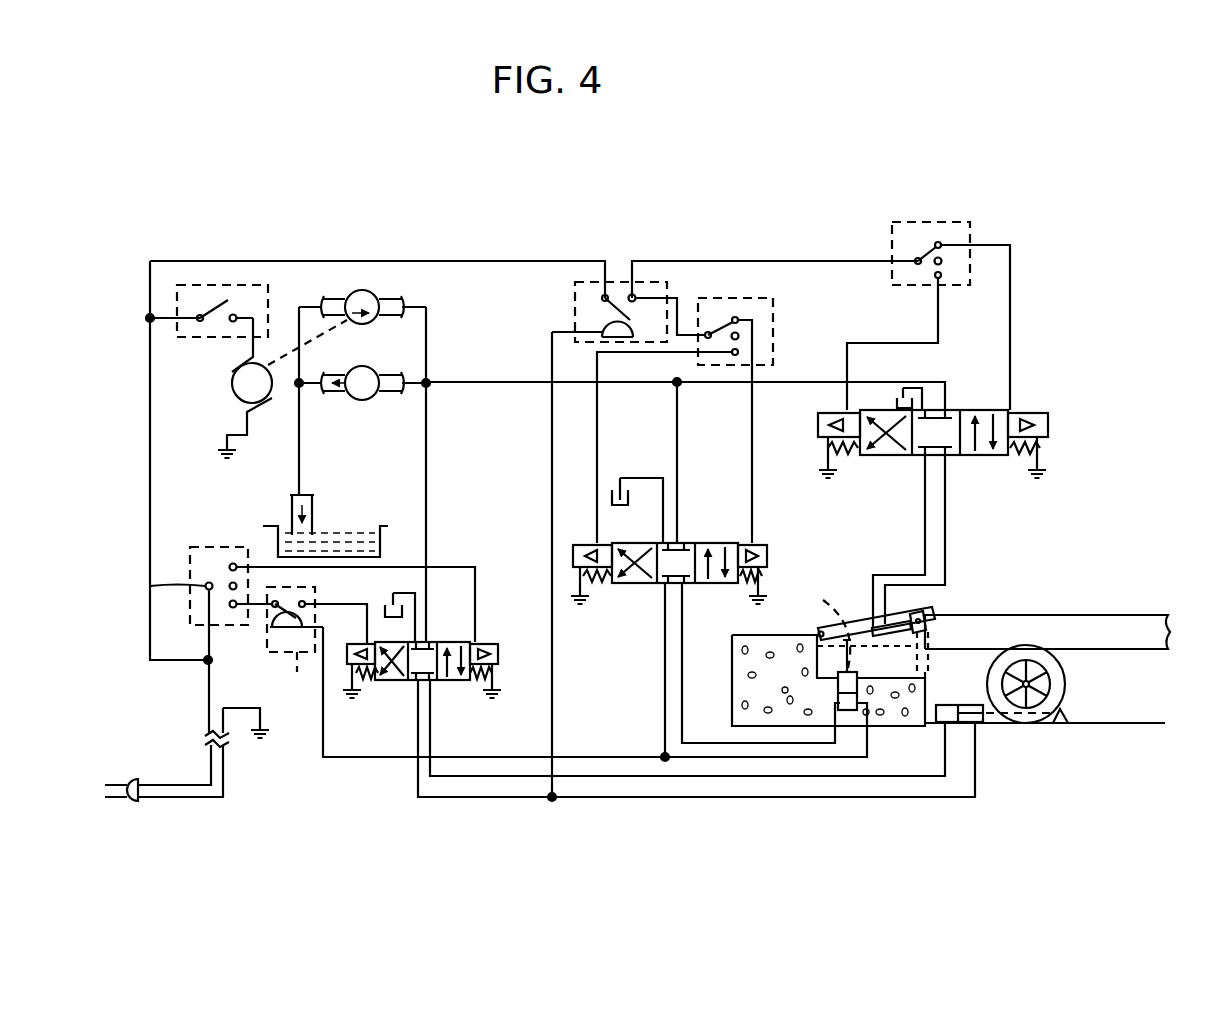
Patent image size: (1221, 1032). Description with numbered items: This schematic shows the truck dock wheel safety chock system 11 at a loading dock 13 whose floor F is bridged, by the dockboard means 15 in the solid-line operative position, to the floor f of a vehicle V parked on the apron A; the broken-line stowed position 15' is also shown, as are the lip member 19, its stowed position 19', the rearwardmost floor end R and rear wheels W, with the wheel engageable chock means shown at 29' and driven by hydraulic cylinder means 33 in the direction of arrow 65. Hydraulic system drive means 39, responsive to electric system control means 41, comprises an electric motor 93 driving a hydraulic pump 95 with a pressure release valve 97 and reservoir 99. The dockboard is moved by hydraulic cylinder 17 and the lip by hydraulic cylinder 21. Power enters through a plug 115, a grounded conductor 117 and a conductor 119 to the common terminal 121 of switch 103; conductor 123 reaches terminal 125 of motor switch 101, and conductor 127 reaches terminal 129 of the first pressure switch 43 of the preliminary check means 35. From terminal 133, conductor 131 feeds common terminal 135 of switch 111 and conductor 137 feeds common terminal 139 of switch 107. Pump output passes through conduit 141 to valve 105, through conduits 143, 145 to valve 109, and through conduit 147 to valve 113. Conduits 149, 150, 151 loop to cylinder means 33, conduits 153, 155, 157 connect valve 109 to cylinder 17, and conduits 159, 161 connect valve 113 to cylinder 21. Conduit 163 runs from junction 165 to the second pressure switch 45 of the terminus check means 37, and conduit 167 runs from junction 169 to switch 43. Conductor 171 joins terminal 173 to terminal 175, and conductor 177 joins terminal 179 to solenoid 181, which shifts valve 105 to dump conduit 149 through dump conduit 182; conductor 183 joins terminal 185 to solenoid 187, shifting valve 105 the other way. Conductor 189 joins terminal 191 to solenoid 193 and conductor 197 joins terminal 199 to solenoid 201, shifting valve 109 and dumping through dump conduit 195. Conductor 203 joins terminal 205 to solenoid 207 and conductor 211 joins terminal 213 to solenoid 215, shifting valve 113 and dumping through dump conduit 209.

The truck dock wheel safety chock system 11 is at (1160, 222).
The truck loading dock 13 is at (758, 694).
The dockboard means 15 is at (876, 609).
The stowed position of dockboard means 15' is at (820, 620).
The hydraulic cylinder 17 is at (858, 675).
The lip bridging member 19 is at (934, 609).
The stowed position of lip member 19' is at (896, 649).
The hydraulic cylinder 21 is at (870, 570).
The wheel support 29' is at (1055, 755).
The hydraulic cylinder means 33 is at (958, 700).
The preliminary check means 35 is at (611, 168).
The terminus check means 37 is at (280, 810).
The hydraulic system drive means 39 is at (343, 238).
The electric system control means 41 is at (74, 638).
The first hydraulic pressure actuated single pole single throw switch 43 is at (660, 282).
The second hydraulic pressure actuated single pole single throw switch 45 is at (284, 704).
The arrow 65 is at (1028, 888).
The electric motor 93 is at (232, 392).
The hydraulic pump 95 is at (370, 296).
The pressure release valve 97 is at (362, 400).
The reservoir 99 is at (341, 517).
The single pole single throw switch 101 is at (197, 295).
The single pole double throw switch 103 is at (203, 547).
The three position solenoid actuated valve 105 is at (392, 697).
The single pole double throw switch 107 is at (775, 298).
The solenoid actuated three position valve 109 is at (715, 503).
The single pole double throw switch 111 is at (902, 232).
The solenoid actuated three position valve 113 is at (980, 358).
The plug 115 is at (128, 802).
The conductor 117 is at (200, 800).
The conductor 119 is at (172, 785).
The common terminal 121 is at (150, 586).
The conductor 123 is at (150, 495).
The terminal 125 is at (199, 334).
The conductor 127 is at (464, 261).
The terminal 129 is at (600, 299).
The conductor 131 is at (832, 261).
The terminal 133 is at (632, 292).
The common terminal 135 is at (912, 268).
The conductor 137 is at (677, 296).
The common terminal 139 is at (712, 330).
The conduit 141 is at (428, 500).
The conduit 143 is at (495, 384).
The conduit 145 is at (672, 420).
The conduit 147 is at (798, 385).
The conduit 149 is at (416, 747).
The conduit 150 is at (722, 800).
The conduit 151 is at (432, 746).
The conduit 153 is at (665, 660).
The conduit 155 is at (870, 755).
The conduit 157 is at (683, 633).
The conduit 159 is at (923, 492).
The conduit 161 is at (948, 528).
The conduit 163 is at (590, 757).
The junction 165 is at (663, 755).
The conduit 167 is at (552, 540).
The junction 169 is at (553, 801).
The conductor 171 is at (262, 608).
The terminal 173 is at (233, 608).
The terminal 175 is at (283, 600).
The conductor 177 is at (393, 600).
The terminal 179 is at (308, 602).
The solenoid 181 is at (355, 644).
The dump conduit 182 is at (412, 641).
The conductor 183 is at (450, 567).
The terminal 185 is at (233, 562).
The solenoid 187 is at (495, 644).
The conductor 189 is at (668, 354).
The terminal 191 is at (735, 356).
The solenoid 193 is at (595, 542).
The dump conduit 195 is at (647, 500).
The conductor 197 is at (755, 490).
The terminal 199 is at (740, 316).
The solenoid 201 is at (768, 548).
The conductor 203 is at (850, 343).
The terminal 205 is at (936, 280).
The solenoid 207 is at (828, 413).
The dump conduit 209 is at (924, 390).
The conductor 211 is at (1012, 312).
The terminal 213 is at (942, 242).
The solenoid 215 is at (1050, 425).
The floor of the dock structure F is at (770, 634).
The rearwardmost end of the vehicle floor R is at (935, 625).
The floor of the vehicle f is at (1038, 620).
The rear wheels W is at (1065, 672).
The apron A is at (1120, 722).
The truck-like vehicle V is at (1180, 605).